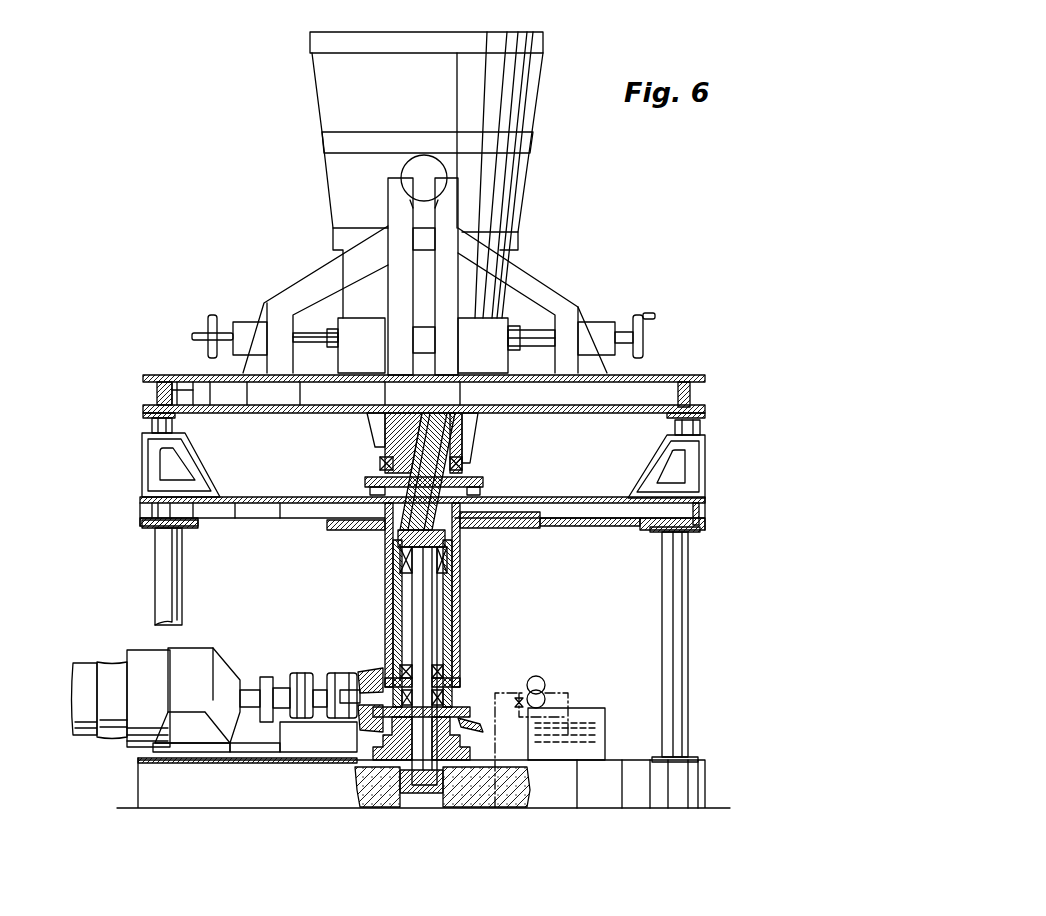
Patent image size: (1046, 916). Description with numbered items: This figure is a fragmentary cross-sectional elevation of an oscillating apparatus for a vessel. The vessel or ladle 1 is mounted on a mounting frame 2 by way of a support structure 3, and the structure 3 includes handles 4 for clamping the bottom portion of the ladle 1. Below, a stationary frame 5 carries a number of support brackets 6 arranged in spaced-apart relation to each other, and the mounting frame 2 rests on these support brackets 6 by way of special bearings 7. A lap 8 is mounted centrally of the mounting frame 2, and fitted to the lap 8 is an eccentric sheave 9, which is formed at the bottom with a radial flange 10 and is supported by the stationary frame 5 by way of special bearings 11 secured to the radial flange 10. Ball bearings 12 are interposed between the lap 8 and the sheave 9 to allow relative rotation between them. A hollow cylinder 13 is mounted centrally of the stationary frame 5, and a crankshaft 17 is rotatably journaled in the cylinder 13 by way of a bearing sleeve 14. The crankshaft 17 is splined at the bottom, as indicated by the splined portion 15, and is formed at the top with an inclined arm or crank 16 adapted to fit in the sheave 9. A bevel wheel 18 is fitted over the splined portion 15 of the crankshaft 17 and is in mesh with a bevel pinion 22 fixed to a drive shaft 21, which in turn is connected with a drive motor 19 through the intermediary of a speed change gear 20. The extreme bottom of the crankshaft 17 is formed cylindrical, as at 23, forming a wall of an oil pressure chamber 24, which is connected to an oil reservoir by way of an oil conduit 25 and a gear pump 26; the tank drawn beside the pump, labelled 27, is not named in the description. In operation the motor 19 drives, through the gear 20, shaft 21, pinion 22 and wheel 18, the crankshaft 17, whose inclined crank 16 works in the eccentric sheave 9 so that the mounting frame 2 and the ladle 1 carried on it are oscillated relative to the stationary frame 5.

The ladle 1 is at (527, 128).
The mounting frame 2 is at (685, 378).
The support structure 3 is at (512, 265).
The handles 4 is at (211, 315).
The stationary frame 5 is at (700, 510).
The support brackets 6 is at (202, 468).
The special bearings 7 is at (173, 427).
The lap 8 is at (478, 417).
The eccentric sheave 9 is at (385, 432).
The radial flange 10 is at (483, 482).
The special bearings 11 is at (367, 488).
The ball bearings 12 is at (462, 463).
The hollow cylinder 13 is at (458, 583).
The bearing sleeve 14 is at (448, 625).
The splined portion 15 is at (425, 713).
The inclined arm or crank 16 is at (397, 535).
The crankshaft 17 is at (418, 603).
The bevel wheel 18 is at (473, 732).
The drive motor 19 is at (108, 670).
The speed change gear 20 is at (200, 655).
The drive shaft 21 is at (353, 687).
The bevel pinion 22 is at (365, 670).
The cylindrical bottom portion 23 is at (400, 790).
The oil pressure chamber 24 is at (403, 807).
The oil conduit 25 is at (531, 750).
The gear pump 26 is at (543, 683).
The tank 27 is at (602, 717).